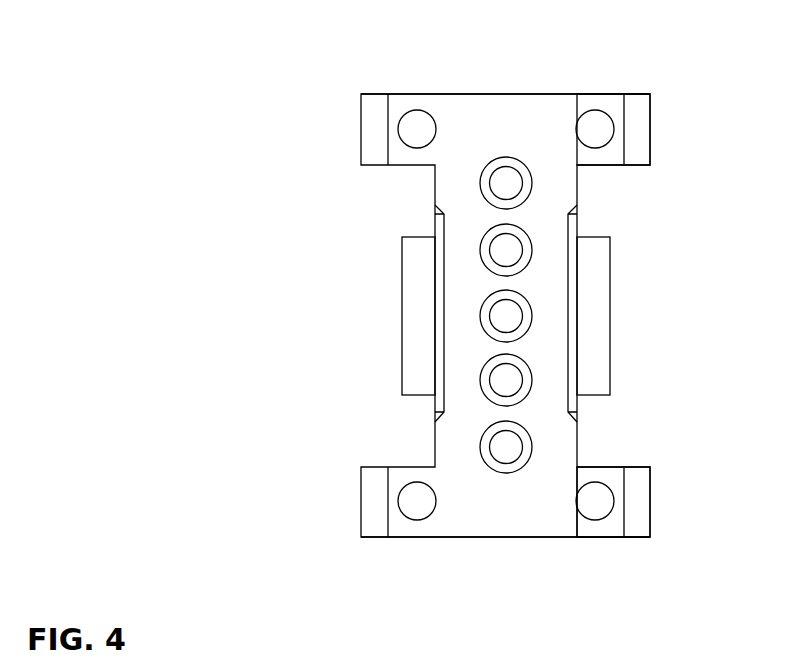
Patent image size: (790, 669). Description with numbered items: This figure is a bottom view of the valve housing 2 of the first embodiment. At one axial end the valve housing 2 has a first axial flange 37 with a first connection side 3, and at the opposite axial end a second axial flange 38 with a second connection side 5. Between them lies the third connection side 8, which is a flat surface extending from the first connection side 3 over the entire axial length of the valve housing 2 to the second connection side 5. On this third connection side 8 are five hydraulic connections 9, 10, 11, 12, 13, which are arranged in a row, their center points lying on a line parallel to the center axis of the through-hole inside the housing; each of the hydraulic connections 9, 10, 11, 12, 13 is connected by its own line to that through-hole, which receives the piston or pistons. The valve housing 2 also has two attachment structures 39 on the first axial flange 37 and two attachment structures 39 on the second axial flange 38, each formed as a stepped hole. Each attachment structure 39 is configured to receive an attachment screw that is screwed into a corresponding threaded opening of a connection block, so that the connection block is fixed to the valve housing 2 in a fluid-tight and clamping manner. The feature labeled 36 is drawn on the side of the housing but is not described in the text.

The valve housing 2 is at (273, 189).
The first connection side 3 is at (477, 93).
The second connection side 5 is at (460, 537).
The third connection side 8 is at (542, 517).
The hydraulic connection 9 is at (481, 181).
The hydraulic connection 10 is at (482, 253).
The hydraulic connection 11 is at (483, 319).
The hydraulic connection 12 is at (483, 381).
The hydraulic connection 13 is at (485, 451).
The side rib 36 is at (593, 320).
The first axial flange 37 is at (615, 142).
The second axial flange 38 is at (618, 500).
The attachment structure 39 is at (403, 135).